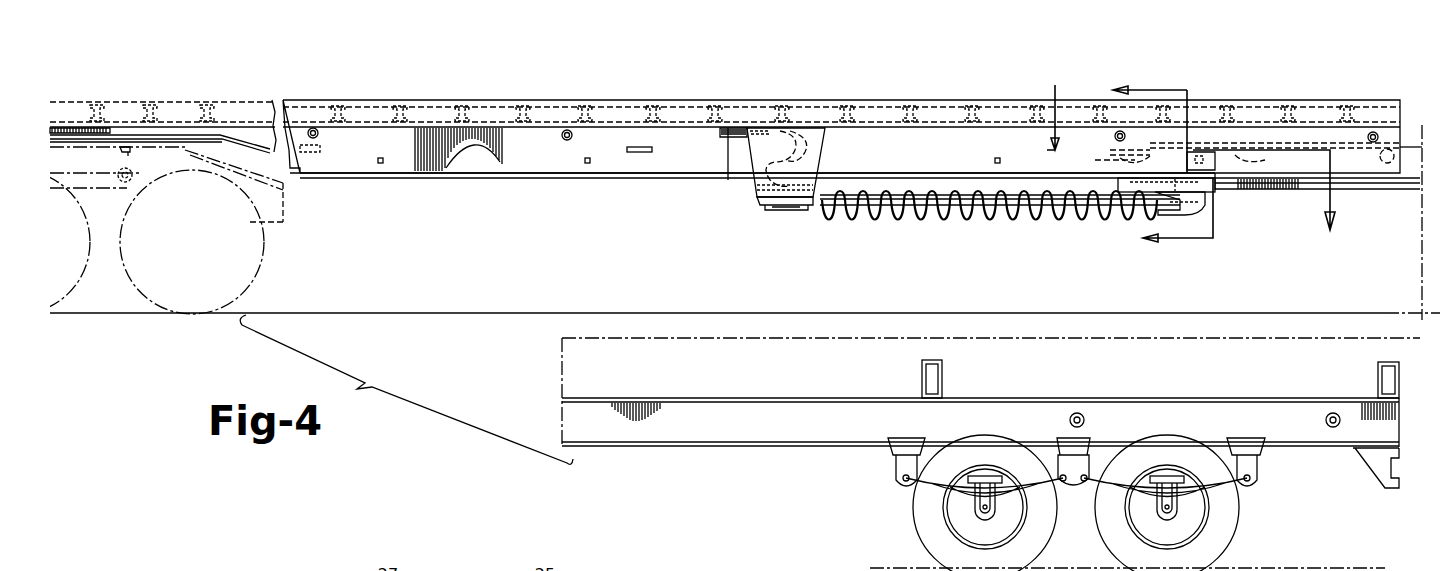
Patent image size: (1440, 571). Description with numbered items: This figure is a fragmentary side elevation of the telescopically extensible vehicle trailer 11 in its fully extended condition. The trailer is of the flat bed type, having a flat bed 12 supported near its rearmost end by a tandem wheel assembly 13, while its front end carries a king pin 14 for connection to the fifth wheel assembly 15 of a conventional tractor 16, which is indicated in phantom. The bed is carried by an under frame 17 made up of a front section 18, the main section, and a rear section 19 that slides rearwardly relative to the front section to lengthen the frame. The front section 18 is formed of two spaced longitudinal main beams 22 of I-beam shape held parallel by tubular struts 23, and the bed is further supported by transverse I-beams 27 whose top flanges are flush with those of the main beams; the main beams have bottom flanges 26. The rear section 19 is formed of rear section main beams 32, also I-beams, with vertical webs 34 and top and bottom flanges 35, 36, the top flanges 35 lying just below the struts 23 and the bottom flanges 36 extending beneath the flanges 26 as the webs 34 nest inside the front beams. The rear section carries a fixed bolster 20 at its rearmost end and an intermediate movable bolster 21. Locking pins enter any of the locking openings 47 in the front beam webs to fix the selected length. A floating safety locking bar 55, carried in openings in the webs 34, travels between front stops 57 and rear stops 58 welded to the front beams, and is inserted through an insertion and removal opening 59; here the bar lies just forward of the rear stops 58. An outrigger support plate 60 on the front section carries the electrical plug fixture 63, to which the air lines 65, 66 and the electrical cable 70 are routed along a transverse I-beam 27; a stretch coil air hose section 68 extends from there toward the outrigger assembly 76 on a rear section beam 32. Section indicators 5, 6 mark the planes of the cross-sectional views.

The telescopically extensible vehicle trailer 11 is at (792, 94).
The flat bed 12 is at (630, 101).
The wheel assembly 13 is at (1086, 522).
The king pin 14 is at (118, 152).
The fifth wheel assembly 15 is at (285, 183).
The tractor 16 is at (264, 258).
The under frame 17 is at (547, 187).
The front section 18 is at (476, 160).
The rear section 19 is at (1397, 190).
The fixed bolster 20 is at (1376, 376).
The intermediate load supporting bolster 21 is at (945, 382).
The longitudinal main beams 22 is at (440, 170).
The tubular struts 23 is at (1362, 104).
The bottom flanges 26 is at (675, 180).
The transverse I-beams 27 is at (418, 107).
The rear section main beams 32 is at (1242, 203).
The vertical webs 34 is at (1265, 190).
The top flanges 35 is at (1410, 147).
The bottom flanges 36 is at (1300, 190).
The locking openings 47 is at (382, 157).
The floating safety locking bar 55 is at (1107, 160).
The front stops 57 is at (318, 155).
The rear stops 58 is at (1275, 156).
The insertion and removal opening 59 is at (638, 153).
The outrigger support plate 60 is at (750, 206).
The electrical plug fixture 63 is at (812, 162).
The air line 65 is at (727, 128).
The air line 66 is at (727, 170).
The stretch coil air hose section 68 is at (993, 224).
The electrical cable 70 is at (718, 132).
The outrigger assembly 76 is at (1146, 229).
The section line 5- 5 is at (1163, 164).
The section line 6- 6 is at (1193, 156).